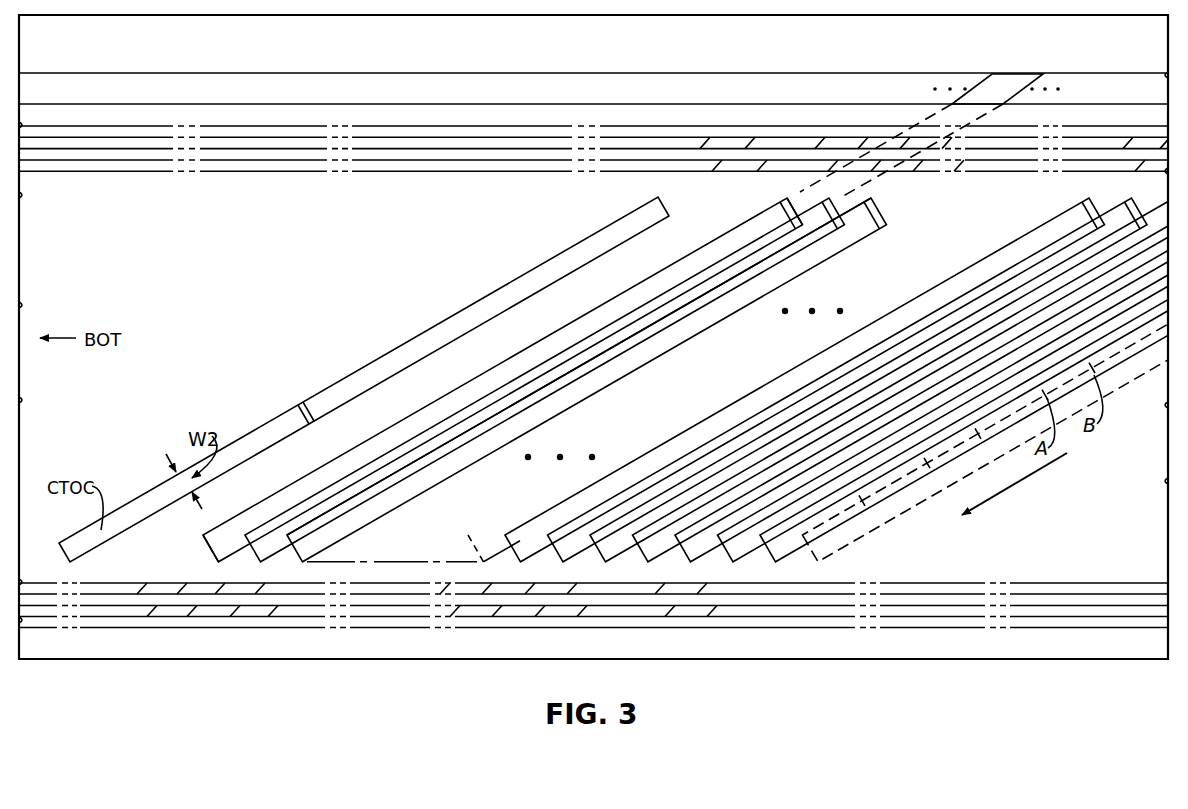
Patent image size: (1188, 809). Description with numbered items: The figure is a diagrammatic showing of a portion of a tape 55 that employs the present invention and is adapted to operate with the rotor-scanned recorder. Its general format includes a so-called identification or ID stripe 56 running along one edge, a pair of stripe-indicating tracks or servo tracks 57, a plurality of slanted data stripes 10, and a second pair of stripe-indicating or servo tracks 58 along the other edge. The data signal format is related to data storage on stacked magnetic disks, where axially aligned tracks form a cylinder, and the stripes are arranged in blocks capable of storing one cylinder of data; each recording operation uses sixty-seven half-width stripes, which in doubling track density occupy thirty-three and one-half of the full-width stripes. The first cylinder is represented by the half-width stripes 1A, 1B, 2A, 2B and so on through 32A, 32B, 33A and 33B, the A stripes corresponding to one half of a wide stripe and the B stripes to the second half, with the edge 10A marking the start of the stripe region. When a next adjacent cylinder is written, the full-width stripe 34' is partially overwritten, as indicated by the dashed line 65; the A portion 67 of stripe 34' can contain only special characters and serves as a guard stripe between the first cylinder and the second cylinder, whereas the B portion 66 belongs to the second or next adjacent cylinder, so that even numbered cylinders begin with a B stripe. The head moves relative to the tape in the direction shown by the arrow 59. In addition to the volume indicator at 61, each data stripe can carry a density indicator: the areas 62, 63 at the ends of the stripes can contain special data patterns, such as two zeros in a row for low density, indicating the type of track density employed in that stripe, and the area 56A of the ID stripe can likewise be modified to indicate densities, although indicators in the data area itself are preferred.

The tape 55 is at (376, 661).
The identification stripe 56 is at (377, 77).
The area of the ID stripe 56A is at (1014, 80).
The servo tracks 57 is at (788, 148).
The second pair of servo tracks 58 is at (246, 612).
The head direction arrow 59 is at (988, 512).
The volume indicator 61 is at (312, 404).
The data pattern area 62 is at (793, 199).
The data pattern area 63 is at (794, 212).
The A half-width stripe 1A is at (268, 517).
The B half-width stripe 1B is at (322, 500).
The A half-width stripe 2A is at (371, 470).
The B half-width stripe 2B is at (421, 448).
The data stripes 10 is at (238, 549).
The track start edge 10A is at (204, 548).
The A half-width stripe 32A is at (658, 552).
The B half-width stripe 32B is at (698, 550).
The A half-width stripe 33A is at (740, 548).
The B half-width stripe 33B is at (781, 548).
The full-width stripe 34' is at (990, 391).
The dashed line 65 is at (868, 506).
The B portion 66 is at (931, 470).
The A portion 67 is at (982, 437).